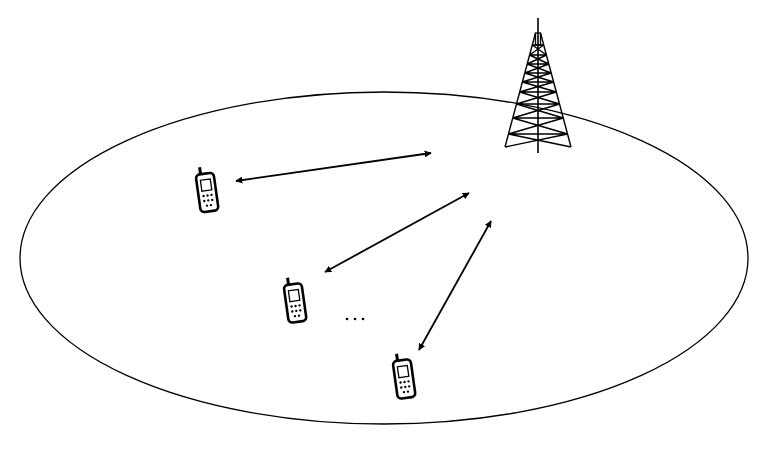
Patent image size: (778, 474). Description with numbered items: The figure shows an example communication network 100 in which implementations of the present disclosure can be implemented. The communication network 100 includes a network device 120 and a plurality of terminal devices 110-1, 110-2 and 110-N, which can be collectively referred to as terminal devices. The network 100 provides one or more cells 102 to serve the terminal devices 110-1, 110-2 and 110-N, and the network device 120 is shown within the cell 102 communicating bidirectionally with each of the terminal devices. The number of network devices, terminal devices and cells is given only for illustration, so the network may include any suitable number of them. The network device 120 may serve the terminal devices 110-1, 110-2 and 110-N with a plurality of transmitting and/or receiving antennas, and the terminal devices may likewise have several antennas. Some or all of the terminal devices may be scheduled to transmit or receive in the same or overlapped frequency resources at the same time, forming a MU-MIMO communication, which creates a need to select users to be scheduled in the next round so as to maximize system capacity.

The communication network 100 is at (180, 90).
The cell 102 is at (623, 129).
The network device 120 is at (543, 41).
The terminal device 110-1 is at (197, 181).
The terminal device 110-2 is at (287, 280).
The terminal device 110-N is at (395, 370).